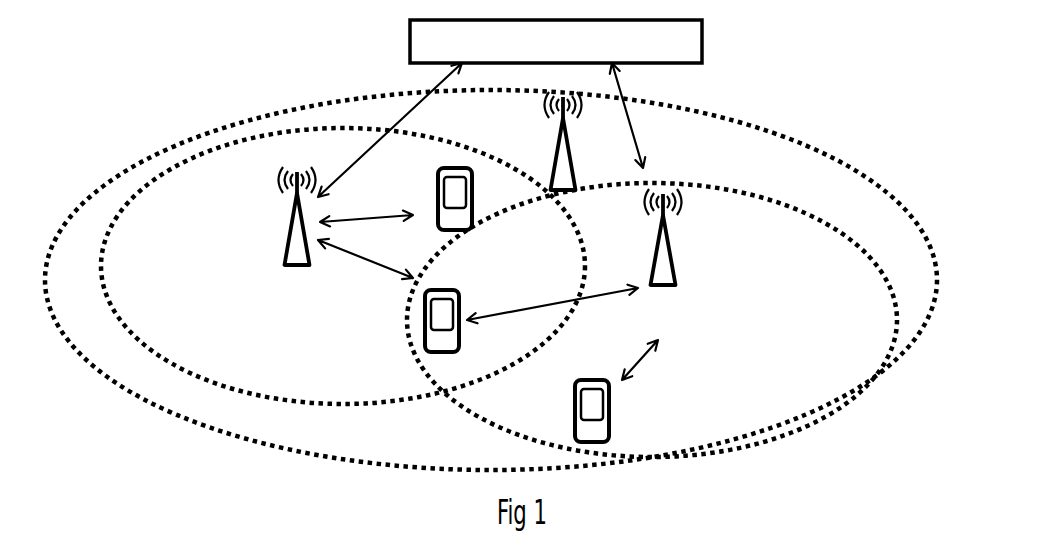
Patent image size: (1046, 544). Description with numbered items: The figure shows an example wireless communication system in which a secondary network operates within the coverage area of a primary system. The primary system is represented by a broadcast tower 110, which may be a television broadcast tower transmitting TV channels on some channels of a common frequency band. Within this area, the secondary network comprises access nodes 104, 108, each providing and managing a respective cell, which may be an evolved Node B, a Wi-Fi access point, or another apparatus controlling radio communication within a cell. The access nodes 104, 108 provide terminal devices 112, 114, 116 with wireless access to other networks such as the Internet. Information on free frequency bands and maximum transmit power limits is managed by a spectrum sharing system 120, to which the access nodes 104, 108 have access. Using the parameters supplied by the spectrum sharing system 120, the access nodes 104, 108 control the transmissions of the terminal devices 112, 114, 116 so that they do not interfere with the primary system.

The access node 104 is at (286, 240).
The access node 108 is at (653, 256).
The broadcast tower 110 is at (554, 148).
The terminal device 112 is at (428, 292).
The terminal device 114 is at (578, 383).
The terminal device 116 is at (438, 170).
The spectrum sharing system 120 is at (556, 41).